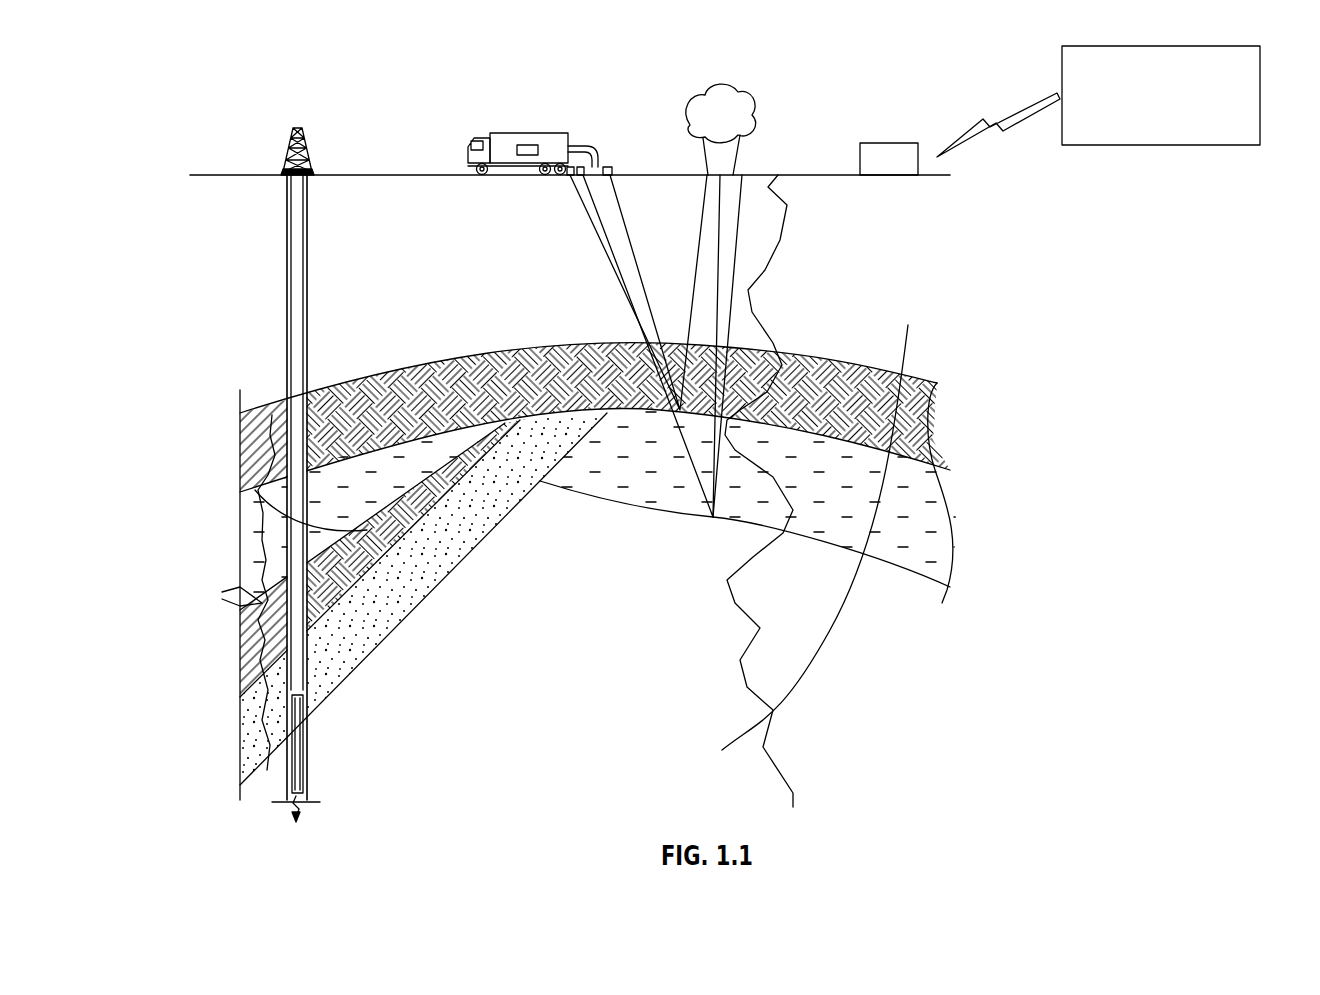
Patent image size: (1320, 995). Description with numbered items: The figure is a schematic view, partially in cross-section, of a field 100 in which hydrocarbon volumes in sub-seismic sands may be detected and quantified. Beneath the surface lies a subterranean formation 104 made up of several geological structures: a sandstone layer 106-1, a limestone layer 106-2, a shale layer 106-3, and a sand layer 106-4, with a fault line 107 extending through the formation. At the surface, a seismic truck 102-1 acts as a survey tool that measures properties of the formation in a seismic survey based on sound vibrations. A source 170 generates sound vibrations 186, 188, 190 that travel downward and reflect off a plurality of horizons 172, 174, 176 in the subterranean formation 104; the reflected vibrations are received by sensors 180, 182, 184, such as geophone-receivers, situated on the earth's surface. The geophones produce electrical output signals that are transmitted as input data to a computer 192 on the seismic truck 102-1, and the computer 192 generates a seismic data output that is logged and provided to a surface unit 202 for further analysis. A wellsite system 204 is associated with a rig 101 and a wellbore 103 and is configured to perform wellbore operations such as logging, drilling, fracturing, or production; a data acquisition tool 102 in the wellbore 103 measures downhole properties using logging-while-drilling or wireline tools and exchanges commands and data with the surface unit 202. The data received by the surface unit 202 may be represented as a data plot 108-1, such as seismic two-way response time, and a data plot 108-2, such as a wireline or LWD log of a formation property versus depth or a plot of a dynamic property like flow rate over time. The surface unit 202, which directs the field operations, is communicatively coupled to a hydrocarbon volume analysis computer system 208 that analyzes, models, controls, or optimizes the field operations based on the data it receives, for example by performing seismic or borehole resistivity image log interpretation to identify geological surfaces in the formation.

The field 100 is at (840, 88).
The rig 101 is at (283, 138).
The data acquisition tool 102 is at (303, 740).
The seismic truck 102-1 is at (511, 133).
The wellbore 103 is at (308, 233).
The subterranean formation 104 is at (615, 688).
The sandstone layer 106-1 is at (367, 388).
The limestone layer 106-2 is at (312, 540).
The shale layer 106-3 is at (273, 472).
The sand layer 106-4 is at (450, 557).
The fault line 107 is at (906, 337).
The data plot 108-1 is at (752, 642).
The data plot 108-2 is at (260, 570).
The source 170 is at (738, 106).
The horizon 172 is at (563, 343).
The horizon 174 is at (497, 425).
The horizon 176 is at (667, 513).
The sensor 180 is at (610, 165).
The sensor 182 is at (597, 162).
The sensor 184 is at (570, 148).
The sound vibration 186 is at (737, 270).
The sound vibration 188 is at (719, 227).
The sound vibration 190 is at (705, 195).
The computer 192 is at (534, 146).
The surface unit 202 is at (893, 143).
The wellsite system 204 is at (314, 157).
The hydrocarbon volume analysis computer system 208 is at (1196, 146).